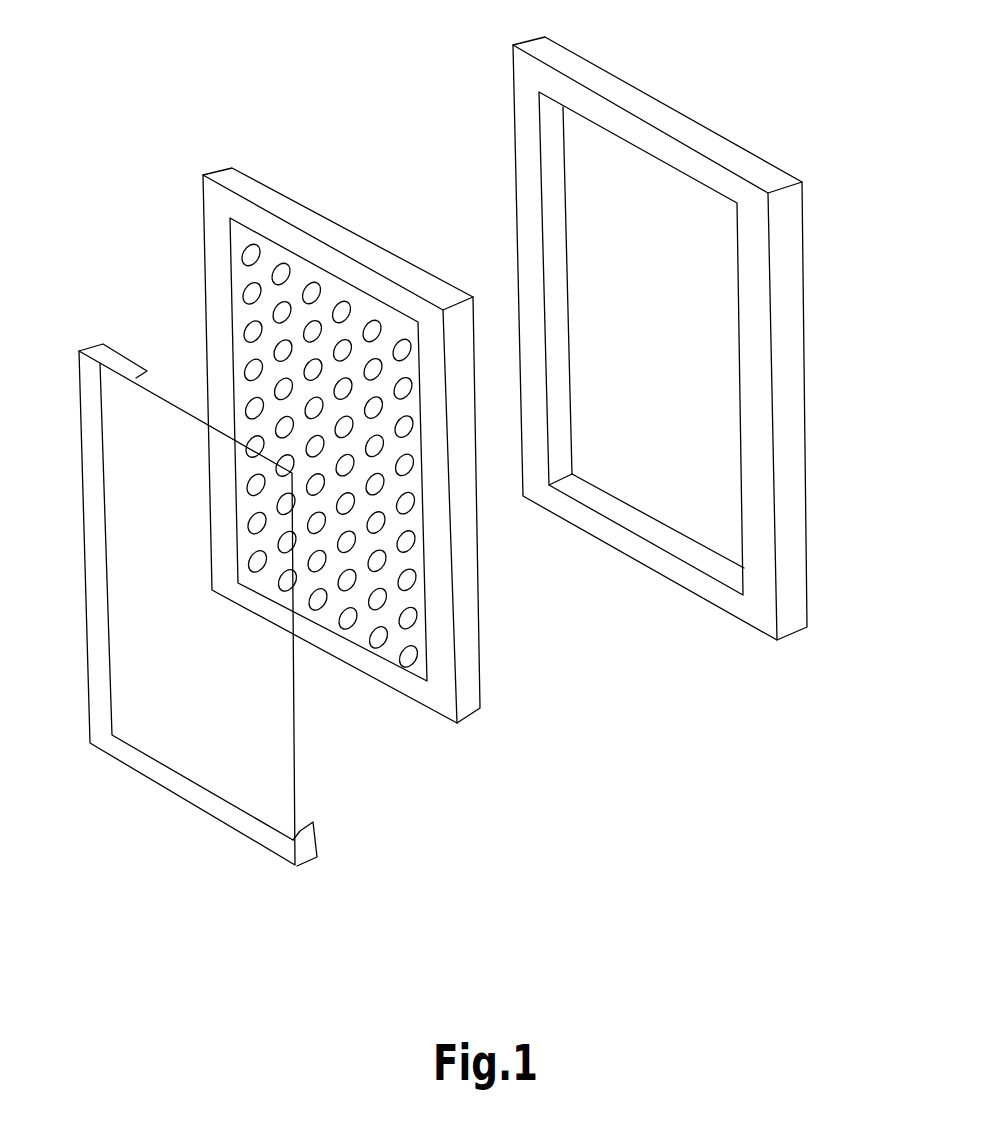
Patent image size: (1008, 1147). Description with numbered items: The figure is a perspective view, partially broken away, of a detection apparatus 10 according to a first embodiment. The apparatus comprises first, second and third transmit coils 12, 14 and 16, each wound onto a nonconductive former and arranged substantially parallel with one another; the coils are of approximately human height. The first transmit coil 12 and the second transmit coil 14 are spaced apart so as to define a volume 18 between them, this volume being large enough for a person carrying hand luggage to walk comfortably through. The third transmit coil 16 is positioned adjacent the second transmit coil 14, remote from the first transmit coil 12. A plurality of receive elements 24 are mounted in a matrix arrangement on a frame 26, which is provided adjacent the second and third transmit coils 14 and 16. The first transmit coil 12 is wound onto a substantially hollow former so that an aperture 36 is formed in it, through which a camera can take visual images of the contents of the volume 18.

The detection apparatus 10 is at (327, 117).
The first transmit coil 12 is at (719, 389).
The second transmit coil 14 is at (298, 466).
The third transmit coil 16 is at (304, 868).
The volume 18 is at (618, 625).
The receive elements 24 is at (249, 329).
The frame 26 is at (234, 404).
The aperture 36 is at (703, 403).